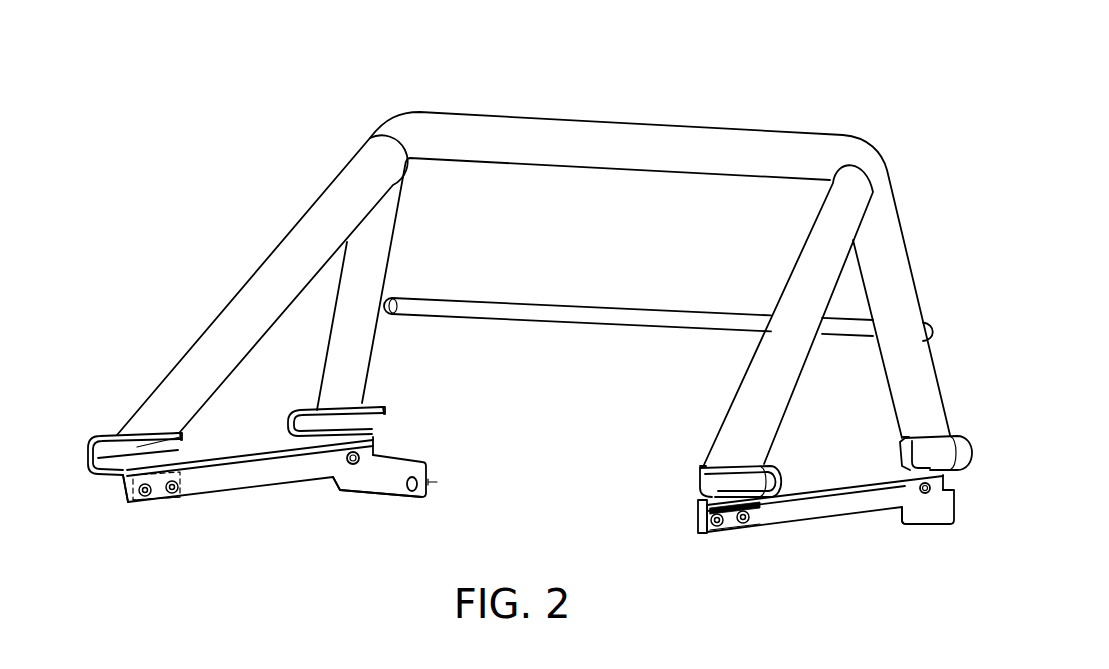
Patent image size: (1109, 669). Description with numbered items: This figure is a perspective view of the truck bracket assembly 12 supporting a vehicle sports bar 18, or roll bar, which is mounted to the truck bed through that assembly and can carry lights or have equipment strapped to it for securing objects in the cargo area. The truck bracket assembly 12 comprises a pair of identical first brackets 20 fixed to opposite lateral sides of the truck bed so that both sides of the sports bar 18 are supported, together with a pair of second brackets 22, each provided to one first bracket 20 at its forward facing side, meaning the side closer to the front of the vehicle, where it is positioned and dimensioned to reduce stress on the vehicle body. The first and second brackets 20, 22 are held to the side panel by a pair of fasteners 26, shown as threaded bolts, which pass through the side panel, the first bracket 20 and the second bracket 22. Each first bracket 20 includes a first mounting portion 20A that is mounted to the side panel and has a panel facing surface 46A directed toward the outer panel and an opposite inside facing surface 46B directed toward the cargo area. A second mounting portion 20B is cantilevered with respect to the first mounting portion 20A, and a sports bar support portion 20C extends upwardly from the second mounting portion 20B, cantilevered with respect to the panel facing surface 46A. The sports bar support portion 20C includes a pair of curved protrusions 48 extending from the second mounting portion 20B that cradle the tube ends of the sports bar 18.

The truck bracket assembly 12 is at (105, 388).
The sports bar 18 is at (657, 116).
The first bracket 20 is at (375, 396).
The first mounting portion 20A is at (266, 490).
The second mounting portion 20B is at (128, 478).
The sports bar support portion 20C is at (176, 437).
The second bracket 22 is at (161, 500).
The fasteners 26 is at (145, 498).
The panel facing surface 46A is at (875, 496).
The inside facing surface 46B is at (305, 463).
The curved protrusions 48 is at (92, 442).